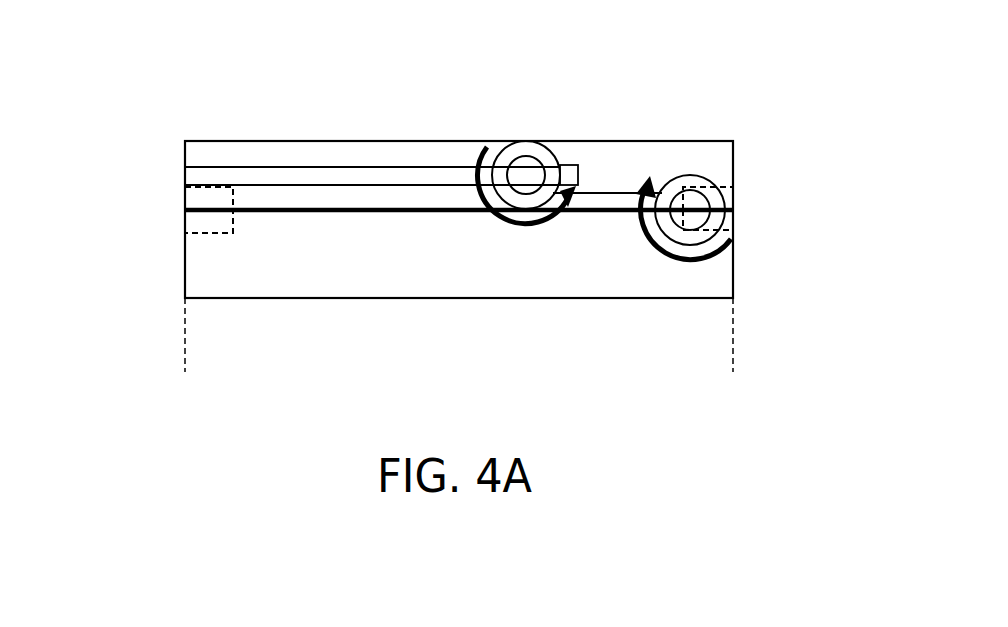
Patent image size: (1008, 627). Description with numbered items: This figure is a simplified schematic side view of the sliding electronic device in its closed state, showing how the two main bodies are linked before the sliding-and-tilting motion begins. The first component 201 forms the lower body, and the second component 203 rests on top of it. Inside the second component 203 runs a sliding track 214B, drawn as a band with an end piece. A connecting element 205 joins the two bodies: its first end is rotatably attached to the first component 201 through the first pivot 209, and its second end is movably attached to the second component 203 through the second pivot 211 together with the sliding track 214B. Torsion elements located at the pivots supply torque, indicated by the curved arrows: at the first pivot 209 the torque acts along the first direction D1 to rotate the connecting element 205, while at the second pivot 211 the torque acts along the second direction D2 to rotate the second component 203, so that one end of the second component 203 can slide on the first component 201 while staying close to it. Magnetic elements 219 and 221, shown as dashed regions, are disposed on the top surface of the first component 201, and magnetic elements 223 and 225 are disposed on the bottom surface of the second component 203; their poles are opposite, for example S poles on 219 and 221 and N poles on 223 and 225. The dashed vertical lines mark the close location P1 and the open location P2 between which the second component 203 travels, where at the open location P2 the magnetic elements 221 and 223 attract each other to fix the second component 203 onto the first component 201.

The first component 201 is at (457, 300).
The second component 203 is at (286, 141).
The sliding track 214B is at (412, 168).
The connecting element 205 is at (614, 200).
The first pivot 209 is at (683, 190).
The second pivot 211 is at (527, 160).
The magnetic element 219 is at (185, 230).
The magnetic element 221 is at (733, 227).
The magnetic element 223 is at (185, 187).
The magnetic element 225 is at (733, 188).
The first direction D1 is at (683, 232).
The second direction D2 is at (527, 204).
The close location P1 is at (188, 353).
The open location P2 is at (737, 353).